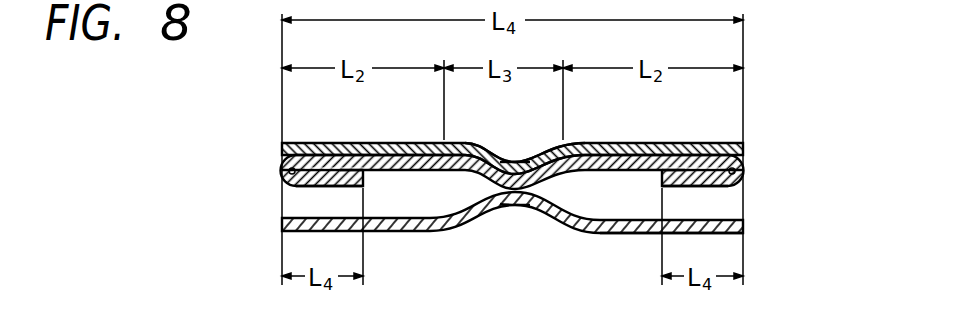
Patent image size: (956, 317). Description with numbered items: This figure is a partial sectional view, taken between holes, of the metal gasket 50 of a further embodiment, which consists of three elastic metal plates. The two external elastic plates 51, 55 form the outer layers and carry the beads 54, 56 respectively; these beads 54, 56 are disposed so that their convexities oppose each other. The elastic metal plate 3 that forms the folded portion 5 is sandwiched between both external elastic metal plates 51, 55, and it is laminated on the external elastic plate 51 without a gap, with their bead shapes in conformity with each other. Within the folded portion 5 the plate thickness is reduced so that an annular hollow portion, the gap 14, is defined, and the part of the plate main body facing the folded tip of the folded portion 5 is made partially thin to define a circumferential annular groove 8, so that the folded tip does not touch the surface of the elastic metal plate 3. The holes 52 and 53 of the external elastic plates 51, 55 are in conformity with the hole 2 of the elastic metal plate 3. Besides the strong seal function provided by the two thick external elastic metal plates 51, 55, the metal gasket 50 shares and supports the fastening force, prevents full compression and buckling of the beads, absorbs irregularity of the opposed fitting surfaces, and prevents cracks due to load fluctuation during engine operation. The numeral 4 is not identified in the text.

The hole 2 is at (282, 163).
The elastic metal plate 3 is at (640, 143).
The thin-walled central portion 4 is at (512, 163).
The folded portion 5 is at (305, 186).
The annular groove 8 is at (367, 175).
The gap 14 is at (283, 172).
The metal gasket 50 is at (494, 241).
The external elastic plate 51 is at (582, 143).
The hole 52 is at (282, 148).
The hole 53 is at (282, 226).
The bead 54 is at (486, 157).
The external elastic plate 55 is at (630, 233).
The bead 56 is at (523, 206).